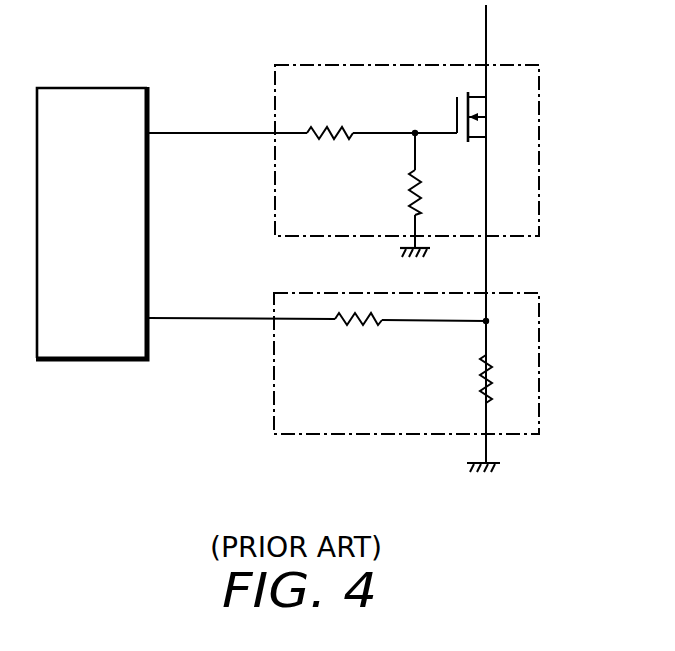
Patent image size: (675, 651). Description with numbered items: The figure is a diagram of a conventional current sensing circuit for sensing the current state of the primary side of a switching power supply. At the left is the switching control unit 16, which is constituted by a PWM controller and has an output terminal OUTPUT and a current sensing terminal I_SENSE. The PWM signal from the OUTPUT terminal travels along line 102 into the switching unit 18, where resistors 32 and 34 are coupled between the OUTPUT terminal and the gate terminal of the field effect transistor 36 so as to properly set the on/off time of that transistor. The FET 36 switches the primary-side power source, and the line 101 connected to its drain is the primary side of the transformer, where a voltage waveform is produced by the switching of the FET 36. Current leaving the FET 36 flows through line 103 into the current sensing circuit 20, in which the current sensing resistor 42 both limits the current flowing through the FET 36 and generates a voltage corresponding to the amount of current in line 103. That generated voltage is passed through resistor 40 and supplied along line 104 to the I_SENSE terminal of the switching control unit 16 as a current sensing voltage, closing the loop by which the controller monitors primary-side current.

The switching control unit 16 is at (92, 88).
The switching unit 18 is at (540, 152).
The current sensing circuit 20 is at (540, 365).
The resistor 32 is at (330, 120).
The resistor 34 is at (430, 195).
The field effect transistor 36 is at (493, 117).
The resistor 40 is at (358, 334).
The current sensing resistor 42 is at (498, 413).
The line 101 is at (488, 37).
The line 102 is at (217, 133).
The line 103 is at (488, 265).
The line 104 is at (217, 318).